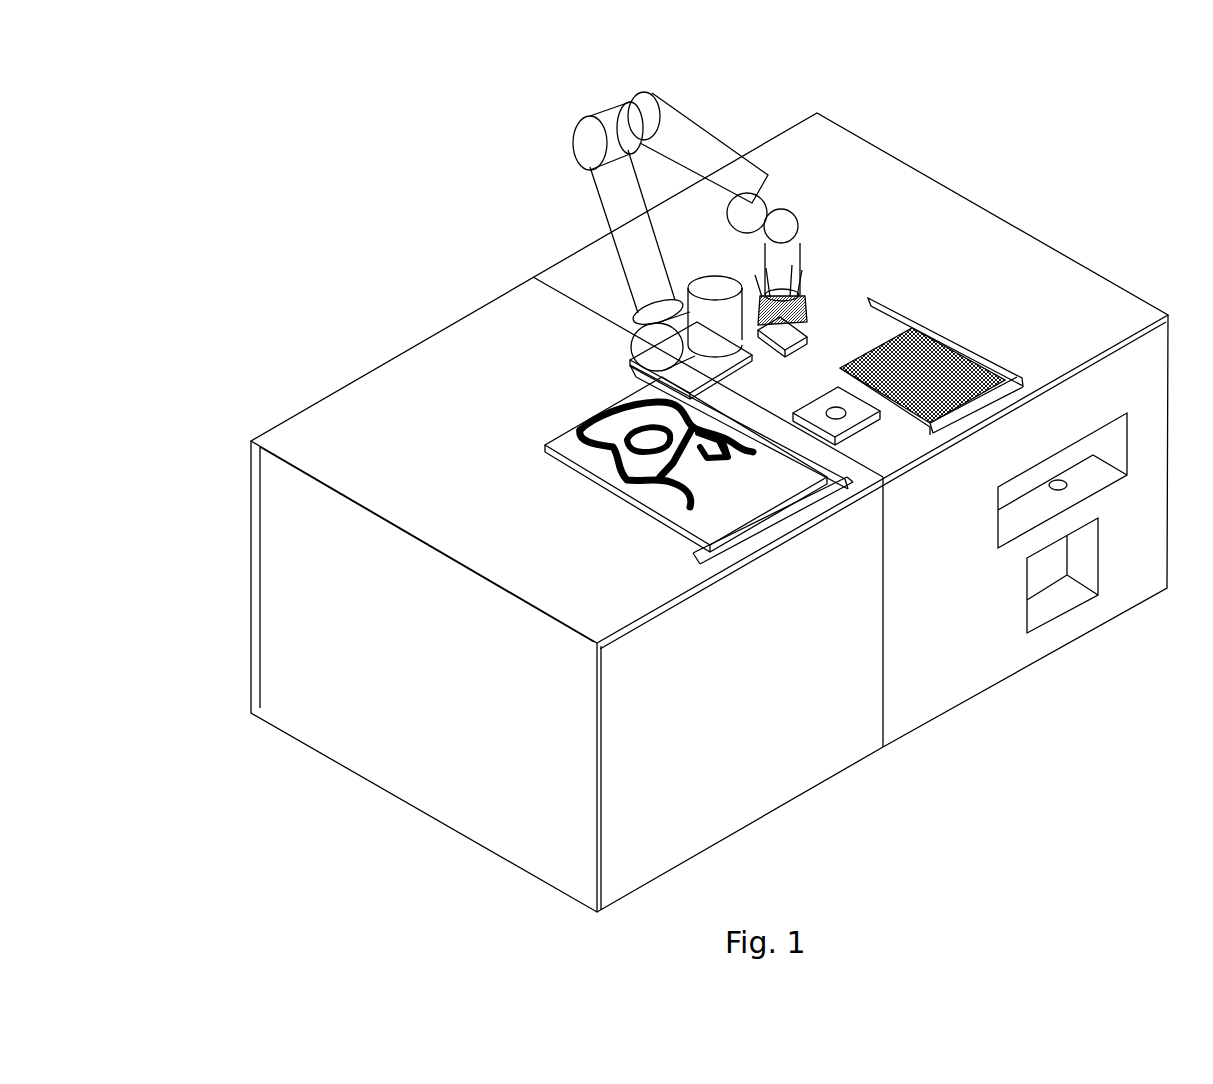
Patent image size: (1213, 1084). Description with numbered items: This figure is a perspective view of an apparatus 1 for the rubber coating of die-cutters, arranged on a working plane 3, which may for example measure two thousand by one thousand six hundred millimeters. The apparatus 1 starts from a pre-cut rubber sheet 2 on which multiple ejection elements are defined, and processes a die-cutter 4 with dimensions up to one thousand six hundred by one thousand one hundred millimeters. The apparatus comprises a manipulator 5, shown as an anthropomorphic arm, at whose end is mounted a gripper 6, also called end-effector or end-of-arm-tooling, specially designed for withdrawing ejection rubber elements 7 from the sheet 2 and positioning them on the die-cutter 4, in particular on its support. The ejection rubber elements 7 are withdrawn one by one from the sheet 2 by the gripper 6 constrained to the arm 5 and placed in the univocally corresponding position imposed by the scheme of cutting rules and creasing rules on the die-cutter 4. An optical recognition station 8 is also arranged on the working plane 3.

The apparatus 1 is at (674, 218).
The pre-cut rubber sheet 2 is at (897, 333).
The working plane 3 is at (348, 445).
The die-cutter 4 is at (543, 441).
The manipulator 5 is at (602, 108).
The gripper 6 is at (807, 303).
The ejection rubber element 7 is at (600, 418).
The optical recognition station 8 is at (852, 418).